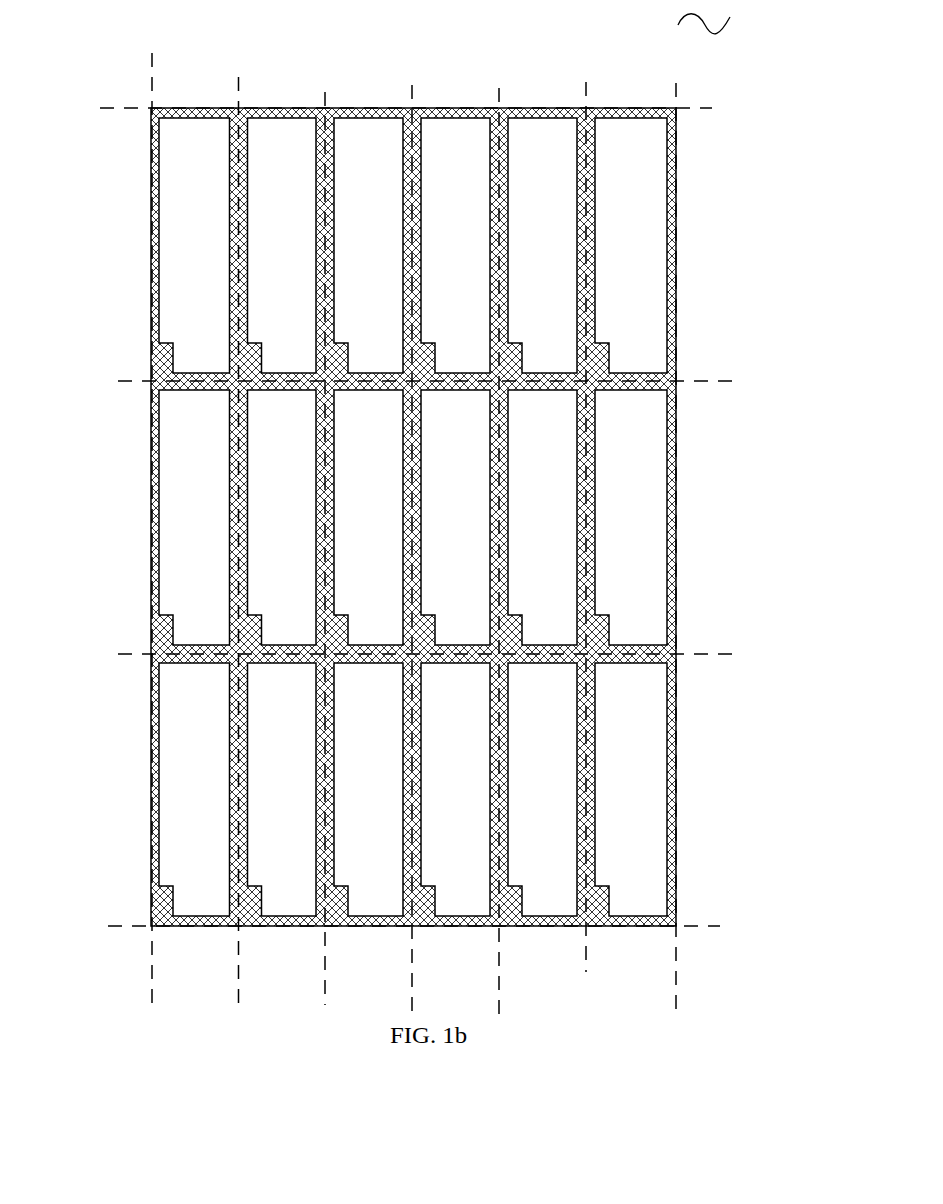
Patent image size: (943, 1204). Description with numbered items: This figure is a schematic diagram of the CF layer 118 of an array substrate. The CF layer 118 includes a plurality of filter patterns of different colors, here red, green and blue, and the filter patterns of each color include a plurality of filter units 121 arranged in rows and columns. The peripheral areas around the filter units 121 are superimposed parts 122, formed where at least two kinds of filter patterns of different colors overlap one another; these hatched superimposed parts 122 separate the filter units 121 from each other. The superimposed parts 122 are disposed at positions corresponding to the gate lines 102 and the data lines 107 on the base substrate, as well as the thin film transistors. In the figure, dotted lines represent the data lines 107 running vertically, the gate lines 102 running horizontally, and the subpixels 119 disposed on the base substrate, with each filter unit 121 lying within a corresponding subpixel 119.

The gate lines 102 is at (702, 648).
The data lines 107 is at (150, 106).
The CF layer 118 is at (725, 19).
The subpixels 119 is at (170, 515).
The filter units 121 is at (193, 147).
The superimposed parts 122 is at (508, 107).